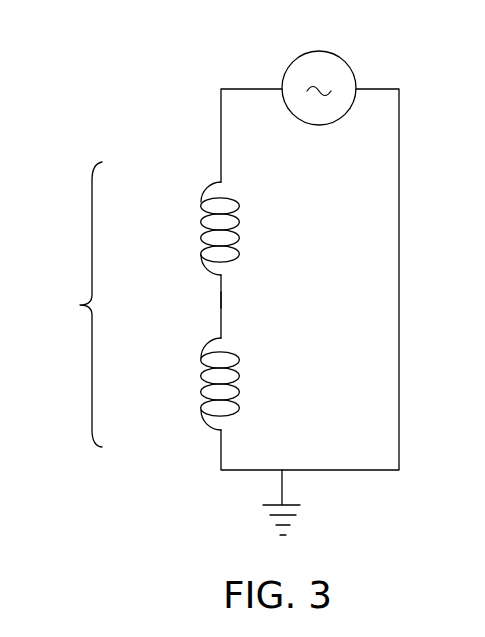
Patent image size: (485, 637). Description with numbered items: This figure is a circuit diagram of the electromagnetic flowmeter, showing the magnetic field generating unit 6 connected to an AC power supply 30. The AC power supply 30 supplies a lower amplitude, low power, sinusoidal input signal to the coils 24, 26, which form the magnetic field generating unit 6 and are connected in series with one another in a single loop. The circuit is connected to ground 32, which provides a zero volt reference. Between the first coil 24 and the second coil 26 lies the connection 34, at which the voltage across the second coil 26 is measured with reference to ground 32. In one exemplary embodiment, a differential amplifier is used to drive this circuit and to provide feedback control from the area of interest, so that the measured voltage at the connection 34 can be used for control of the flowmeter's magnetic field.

The magnetic field generating unit 6 is at (76, 304).
The first coil 24 is at (204, 203).
The second coil 26 is at (204, 404).
The AC power supply 30 is at (344, 62).
The ground 32 is at (268, 518).
The connection 34 is at (221, 300).